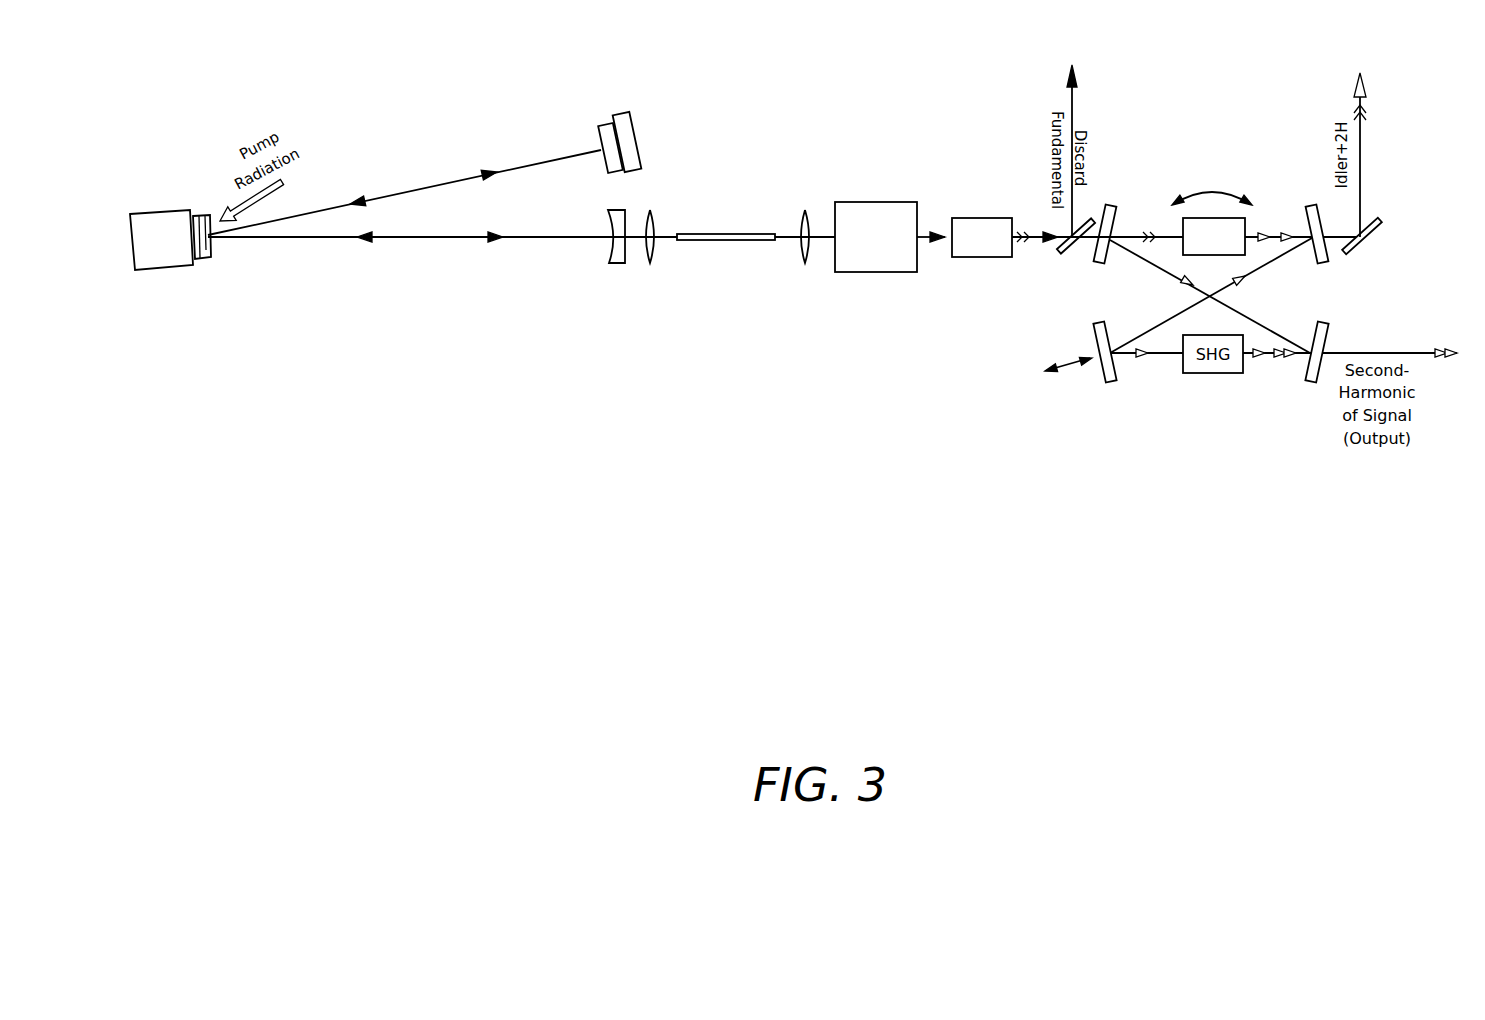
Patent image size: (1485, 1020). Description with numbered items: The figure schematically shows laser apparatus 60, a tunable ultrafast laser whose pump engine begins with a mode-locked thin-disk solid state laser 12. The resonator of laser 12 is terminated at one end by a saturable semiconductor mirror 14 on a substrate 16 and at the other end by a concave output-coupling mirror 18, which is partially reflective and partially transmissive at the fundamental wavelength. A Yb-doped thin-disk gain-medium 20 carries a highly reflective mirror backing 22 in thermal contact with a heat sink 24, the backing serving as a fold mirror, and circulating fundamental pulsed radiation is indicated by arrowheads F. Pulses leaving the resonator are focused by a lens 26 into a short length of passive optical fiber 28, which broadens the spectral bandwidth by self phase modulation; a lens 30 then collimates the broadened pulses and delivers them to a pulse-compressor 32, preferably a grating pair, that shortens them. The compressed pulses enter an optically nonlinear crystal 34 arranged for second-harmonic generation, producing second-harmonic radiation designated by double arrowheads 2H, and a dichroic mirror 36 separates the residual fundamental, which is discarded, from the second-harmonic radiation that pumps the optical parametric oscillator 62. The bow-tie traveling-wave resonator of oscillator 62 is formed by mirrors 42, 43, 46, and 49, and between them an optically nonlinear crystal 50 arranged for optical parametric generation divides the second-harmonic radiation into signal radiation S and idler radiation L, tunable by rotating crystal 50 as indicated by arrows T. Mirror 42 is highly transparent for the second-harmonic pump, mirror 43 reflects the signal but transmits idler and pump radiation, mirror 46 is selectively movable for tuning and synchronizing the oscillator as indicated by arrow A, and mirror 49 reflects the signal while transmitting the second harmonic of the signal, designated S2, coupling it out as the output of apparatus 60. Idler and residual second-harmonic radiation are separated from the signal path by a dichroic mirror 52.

The mode-locked thin-disk solid state laser 12 is at (448, 382).
The saturable semiconductor mirror 14 is at (601, 130).
The substrate 16 is at (628, 130).
The concave output-coupling mirror 18 is at (607, 256).
The thin-disk solid state gain-medium 20 is at (204, 222).
The highly reflective mirror backing 22 is at (197, 260).
The heat sink 24 is at (157, 273).
The lens 26 is at (646, 262).
The optical fiber 28 is at (718, 240).
The lens 30 is at (807, 213).
The pulse-compressor 32 is at (855, 272).
The optically nonlinear crystal 34 is at (978, 218).
The dichroic mirror 36 is at (1072, 253).
The mirror 42 is at (1113, 212).
The mirror 43 is at (1310, 254).
The mirror 46 is at (1105, 383).
The mirror 49 is at (1328, 335).
The optically nonlinear crystal 50 is at (1208, 220).
The dichroic mirror 52 is at (1374, 228).
The laser apparatus 60 is at (536, 631).
The optical parametric oscillator 62 is at (1170, 433).
The fundamental pulsed radiation F is at (352, 200).
The second-harmonic radiation 2H is at (1027, 244).
The signal radiation S is at (1290, 230).
The idler radiation L is at (1260, 230).
The tuning arrows T is at (1212, 188).
The adjustment direction A is at (1062, 373).
The second-harmonic of the signal radiation S2 is at (1283, 360).